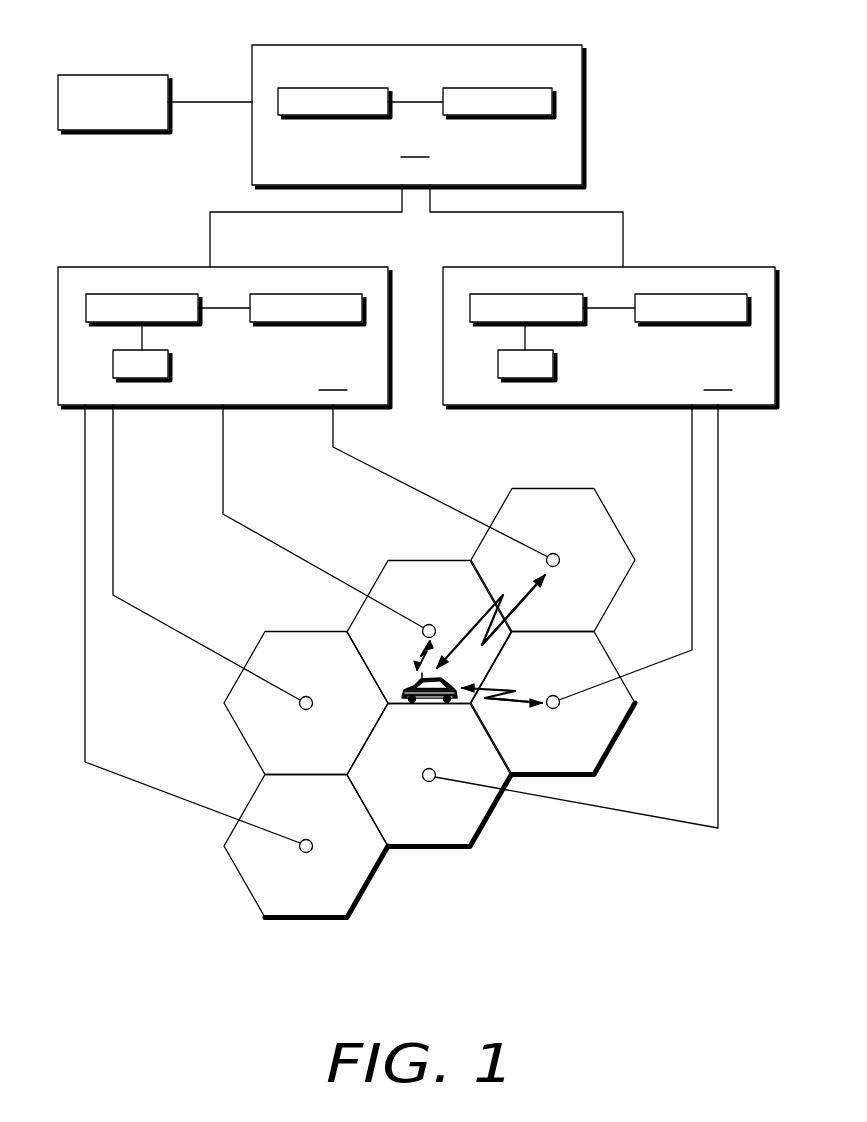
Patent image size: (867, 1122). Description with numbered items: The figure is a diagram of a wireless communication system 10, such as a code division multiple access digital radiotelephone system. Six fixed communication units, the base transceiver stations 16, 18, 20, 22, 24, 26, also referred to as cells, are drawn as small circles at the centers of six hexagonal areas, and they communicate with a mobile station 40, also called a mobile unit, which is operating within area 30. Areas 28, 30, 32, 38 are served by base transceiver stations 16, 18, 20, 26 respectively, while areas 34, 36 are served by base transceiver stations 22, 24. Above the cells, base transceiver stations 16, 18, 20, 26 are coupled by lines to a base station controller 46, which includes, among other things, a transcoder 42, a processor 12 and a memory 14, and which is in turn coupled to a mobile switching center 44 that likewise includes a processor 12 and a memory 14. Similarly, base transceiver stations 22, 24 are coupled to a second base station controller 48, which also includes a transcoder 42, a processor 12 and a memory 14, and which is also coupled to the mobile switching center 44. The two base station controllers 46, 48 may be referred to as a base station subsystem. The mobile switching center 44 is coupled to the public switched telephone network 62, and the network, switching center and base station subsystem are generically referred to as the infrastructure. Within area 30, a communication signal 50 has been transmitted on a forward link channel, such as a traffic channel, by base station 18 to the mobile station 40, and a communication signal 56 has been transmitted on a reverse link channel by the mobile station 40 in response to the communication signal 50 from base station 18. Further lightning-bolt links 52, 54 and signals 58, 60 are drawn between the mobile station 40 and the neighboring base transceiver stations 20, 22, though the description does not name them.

The wireless communication system 10 is at (604, 882).
The processor 12 is at (278, 88).
The memory 14 is at (443, 88).
The base transceiver station 16 is at (306, 696).
The base transceiver station 18 is at (429, 624).
The base transceiver station 20 is at (553, 553).
The base transceiver station 22 is at (553, 695).
The base transceiver station 24 is at (428, 768).
The base transceiver station 26 is at (306, 839).
The area 28 is at (265, 631).
The area 30 is at (388, 560).
The area 32 is at (512, 488).
The area 34 is at (597, 780).
The area 36 is at (460, 855).
The area 38 is at (338, 920).
The mobile station 40 is at (435, 702).
The transcoder 42 is at (168, 350).
The mobile switching center 44 is at (252, 45).
The base station controller 46 is at (58, 267).
The base station controller 48 is at (443, 267).
The communication signal 50 is at (418, 658).
The communication link 52 is at (490, 608).
The communication link 54 is at (498, 684).
The communication signal 56 is at (428, 650).
The uplink signal 58 is at (520, 605).
The uplink signal 60 is at (500, 710).
The public switched telephone network 62 is at (58, 75).